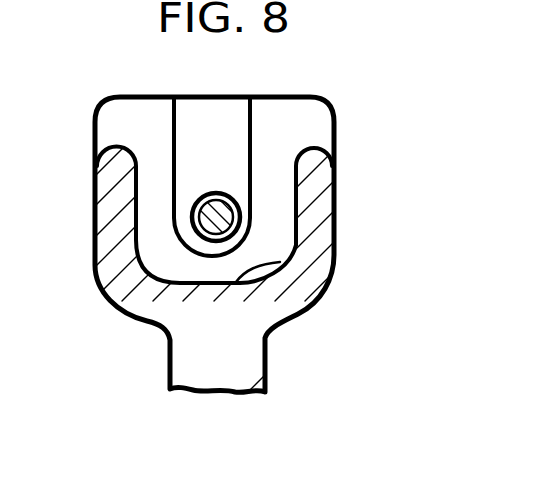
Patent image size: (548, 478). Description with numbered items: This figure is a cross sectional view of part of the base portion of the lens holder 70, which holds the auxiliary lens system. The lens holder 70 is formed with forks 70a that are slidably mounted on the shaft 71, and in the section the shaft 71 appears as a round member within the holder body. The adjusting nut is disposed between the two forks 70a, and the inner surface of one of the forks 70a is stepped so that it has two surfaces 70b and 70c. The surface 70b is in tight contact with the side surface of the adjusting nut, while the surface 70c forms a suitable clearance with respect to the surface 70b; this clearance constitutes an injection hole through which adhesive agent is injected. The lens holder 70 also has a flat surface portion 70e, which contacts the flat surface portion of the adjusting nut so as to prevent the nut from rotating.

The lens holder 70 is at (163, 348).
The forks 70a is at (313, 182).
The surface 70b is at (271, 231).
The surface 70c is at (232, 128).
The flat surface portion 70e is at (280, 263).
The shaft 71 is at (193, 213).